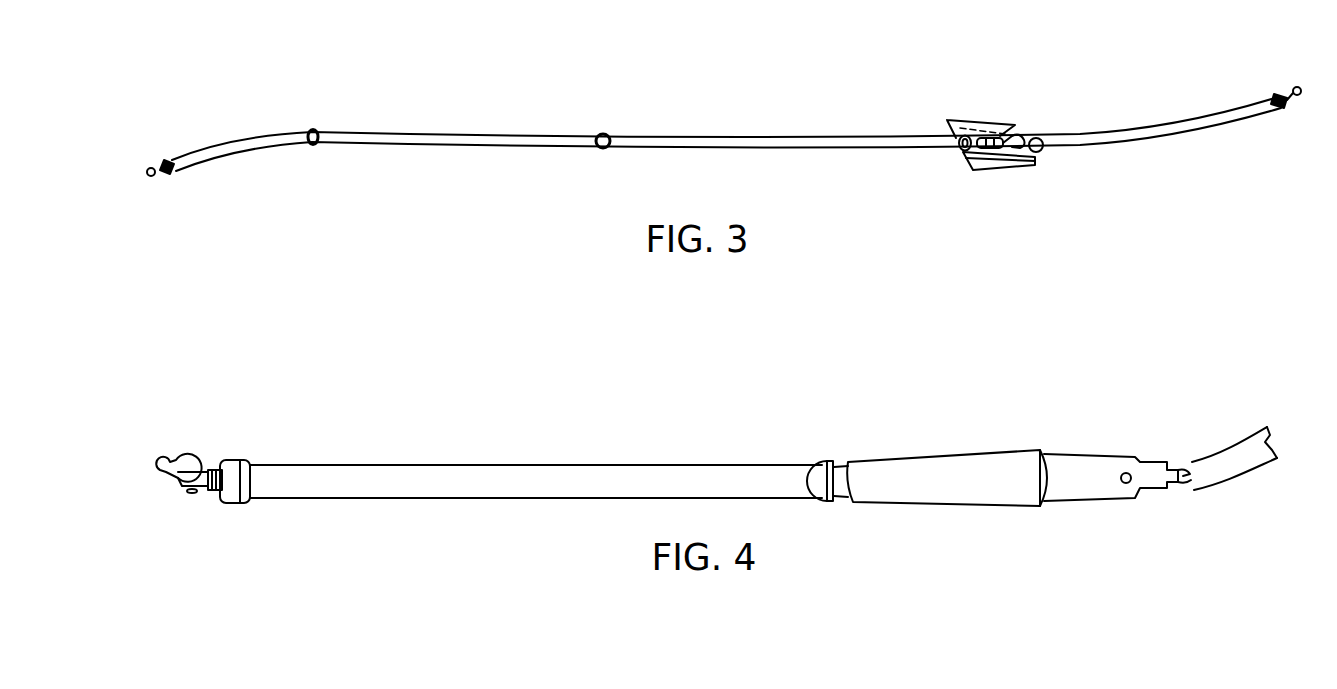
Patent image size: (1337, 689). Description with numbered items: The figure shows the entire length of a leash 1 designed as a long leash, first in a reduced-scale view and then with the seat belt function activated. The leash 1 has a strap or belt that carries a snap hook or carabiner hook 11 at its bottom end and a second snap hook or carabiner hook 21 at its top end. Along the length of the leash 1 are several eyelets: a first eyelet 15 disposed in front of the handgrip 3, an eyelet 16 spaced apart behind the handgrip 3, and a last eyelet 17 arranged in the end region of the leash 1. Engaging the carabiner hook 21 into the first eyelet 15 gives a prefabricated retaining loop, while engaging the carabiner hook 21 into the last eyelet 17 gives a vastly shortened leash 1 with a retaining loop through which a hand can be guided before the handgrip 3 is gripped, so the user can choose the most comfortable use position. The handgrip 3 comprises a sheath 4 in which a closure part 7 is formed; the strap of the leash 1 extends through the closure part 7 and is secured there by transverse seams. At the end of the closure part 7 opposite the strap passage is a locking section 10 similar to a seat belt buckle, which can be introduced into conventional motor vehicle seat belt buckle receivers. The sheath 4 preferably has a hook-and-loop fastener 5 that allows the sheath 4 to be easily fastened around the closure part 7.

In FIG. 3, the leash 1 is at (705, 106).
In FIG. 4, the leash 1 is at (540, 437).
In FIG. 3, the handgrip 3 is at (1013, 122).
In FIG. 4, the handgrip 3 is at (953, 460).
In FIG. 3, the sheath 4 is at (953, 119).
In FIG. 3, the hook-and-loop fastener 5 is at (996, 172).
In FIG. 3, the closure part 7 is at (1021, 136).
In FIG. 4, the closure part 7 is at (1075, 461).
In FIG. 4, the locking section 10 is at (1188, 482).
In FIG. 3, the snap hook or carabiner hook 11 is at (149, 168).
In FIG. 3, the eyelet 15 is at (1046, 146).
In FIG. 4, the eyelet 15 is at (816, 462).
In FIG. 3, the eyelet 16 is at (604, 150).
In FIG. 3, the eyelet 17 is at (315, 129).
In FIG. 3, the snap hook or carabiner hook 21 is at (1296, 85).
In FIG. 4, the snap hook or carabiner hook 21 is at (164, 452).